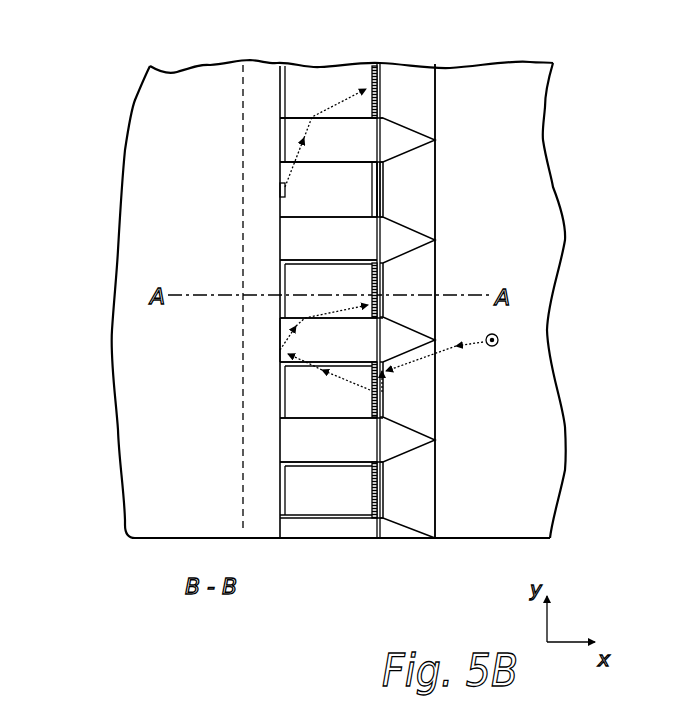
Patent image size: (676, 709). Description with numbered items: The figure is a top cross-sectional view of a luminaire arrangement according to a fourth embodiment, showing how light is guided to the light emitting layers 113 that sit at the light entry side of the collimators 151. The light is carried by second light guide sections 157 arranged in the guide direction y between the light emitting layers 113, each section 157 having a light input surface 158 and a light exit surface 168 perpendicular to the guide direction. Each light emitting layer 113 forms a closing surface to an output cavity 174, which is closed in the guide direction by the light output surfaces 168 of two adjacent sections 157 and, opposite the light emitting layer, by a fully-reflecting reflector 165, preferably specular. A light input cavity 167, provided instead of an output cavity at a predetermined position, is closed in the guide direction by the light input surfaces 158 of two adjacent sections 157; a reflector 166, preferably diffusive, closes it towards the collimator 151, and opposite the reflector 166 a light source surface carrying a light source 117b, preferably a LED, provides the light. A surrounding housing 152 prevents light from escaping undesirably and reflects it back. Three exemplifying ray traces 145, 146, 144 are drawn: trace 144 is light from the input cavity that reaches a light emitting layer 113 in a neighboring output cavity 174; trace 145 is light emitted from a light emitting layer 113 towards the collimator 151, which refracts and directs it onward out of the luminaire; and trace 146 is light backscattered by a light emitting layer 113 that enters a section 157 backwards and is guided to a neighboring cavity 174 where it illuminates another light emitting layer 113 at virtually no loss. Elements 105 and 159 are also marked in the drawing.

The fully-reflecting reflector 165 is at (280, 92).
The light emitting layer 113 is at (370, 88).
The second light guide section 157 is at (290, 138).
The light source 117b is at (280, 189).
The light input cavity 167 is at (290, 207).
The layer 105 is at (379, 204).
The surface 159 is at (284, 252).
The output cavity 174 is at (290, 305).
The ray trace 146 is at (345, 380).
The light exit surface 168 is at (336, 119).
The ray trace 144 is at (310, 150).
The light input surface 158 is at (348, 164).
The reflector 166 is at (377, 185).
The housing 152 is at (397, 416).
The collimator cup 151 is at (420, 406).
The ray trace 145 is at (470, 351).